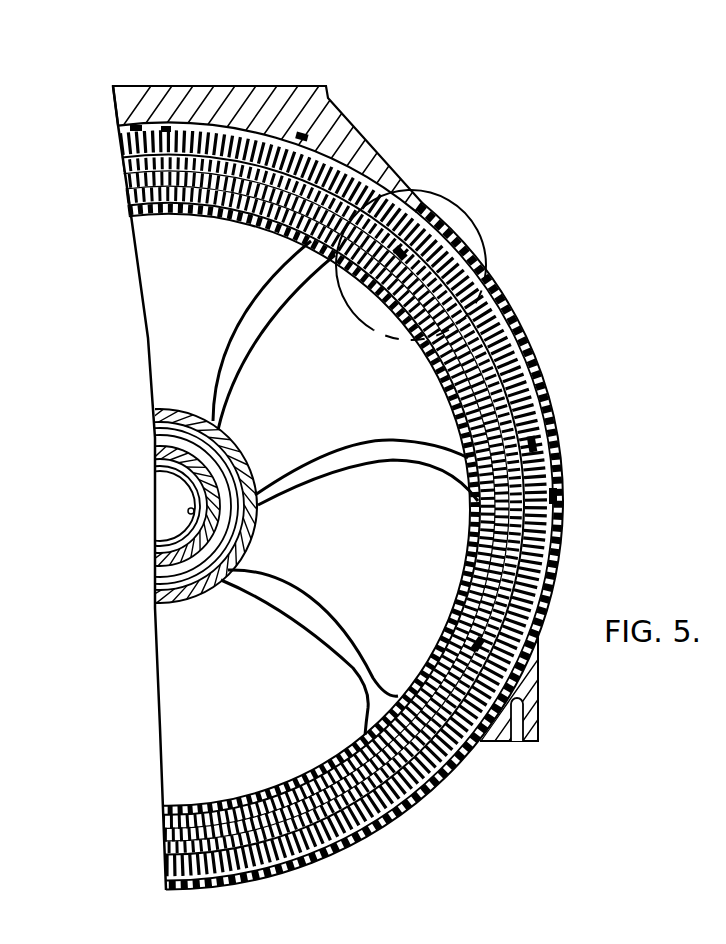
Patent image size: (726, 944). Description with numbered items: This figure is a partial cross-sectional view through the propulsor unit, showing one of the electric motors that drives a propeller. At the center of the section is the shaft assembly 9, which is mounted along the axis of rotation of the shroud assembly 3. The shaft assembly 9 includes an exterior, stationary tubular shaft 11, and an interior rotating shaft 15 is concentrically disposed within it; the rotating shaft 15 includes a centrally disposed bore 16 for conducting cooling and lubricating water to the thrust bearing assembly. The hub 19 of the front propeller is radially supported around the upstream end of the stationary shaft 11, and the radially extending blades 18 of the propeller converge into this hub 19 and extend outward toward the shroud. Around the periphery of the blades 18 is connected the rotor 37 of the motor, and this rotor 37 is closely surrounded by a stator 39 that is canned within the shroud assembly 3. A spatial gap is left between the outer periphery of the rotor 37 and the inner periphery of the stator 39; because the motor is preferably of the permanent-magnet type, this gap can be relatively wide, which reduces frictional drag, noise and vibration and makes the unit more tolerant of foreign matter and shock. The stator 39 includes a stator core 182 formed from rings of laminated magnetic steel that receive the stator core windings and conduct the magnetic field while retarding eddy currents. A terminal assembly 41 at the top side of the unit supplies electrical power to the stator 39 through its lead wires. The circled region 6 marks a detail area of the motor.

The shroud assembly 3 is at (397, 167).
The detail circle 6 is at (462, 199).
The shaft assembly 9 is at (182, 420).
The exterior stationary tubular shaft 11 is at (182, 552).
The rotating shaft 15 is at (227, 537).
The bore 16 is at (182, 500).
The blades 18 is at (237, 320).
The hub 19 is at (224, 440).
The rotor 37 is at (440, 372).
The stator 39 is at (352, 178).
The terminal assembly 41 is at (262, 78).
The stator core 182 is at (538, 526).